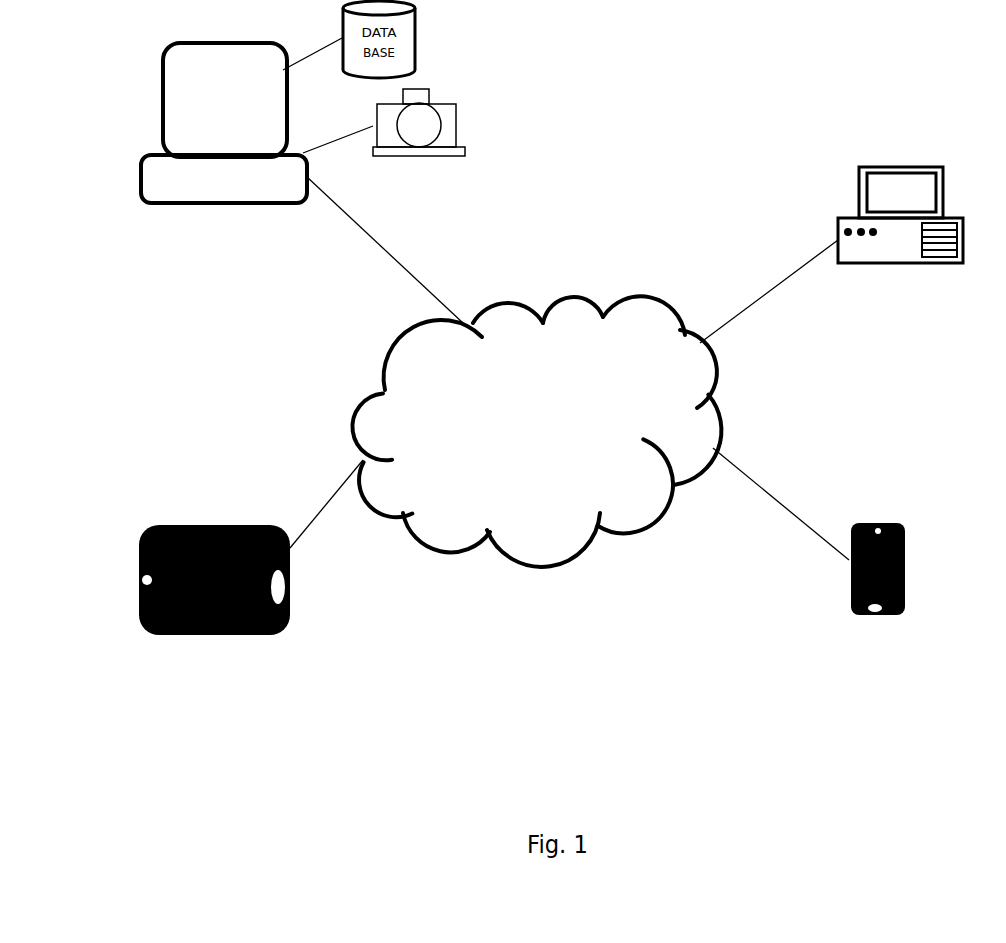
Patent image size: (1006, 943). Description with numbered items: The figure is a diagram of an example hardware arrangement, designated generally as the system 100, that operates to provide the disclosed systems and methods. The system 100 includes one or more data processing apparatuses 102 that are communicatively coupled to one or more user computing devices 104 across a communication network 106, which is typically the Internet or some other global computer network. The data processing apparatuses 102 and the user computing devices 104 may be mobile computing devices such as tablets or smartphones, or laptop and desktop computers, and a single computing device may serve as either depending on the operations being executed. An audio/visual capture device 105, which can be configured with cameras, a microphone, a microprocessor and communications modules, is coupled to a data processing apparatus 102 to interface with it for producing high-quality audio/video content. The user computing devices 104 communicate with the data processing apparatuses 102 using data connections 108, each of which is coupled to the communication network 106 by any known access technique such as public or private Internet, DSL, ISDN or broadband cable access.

The system 100 is at (911, 113).
The data processing apparatus 102 is at (152, 150).
The user computing device 104 is at (858, 190).
The audio/visual capture device 105 is at (452, 119).
The communication network 106 is at (372, 397).
The data connection 108 is at (432, 293).